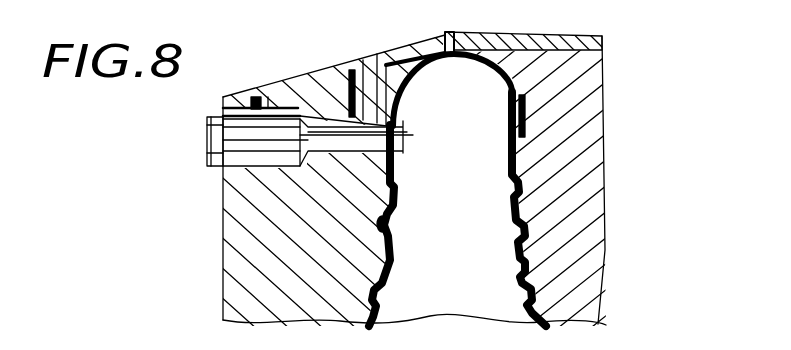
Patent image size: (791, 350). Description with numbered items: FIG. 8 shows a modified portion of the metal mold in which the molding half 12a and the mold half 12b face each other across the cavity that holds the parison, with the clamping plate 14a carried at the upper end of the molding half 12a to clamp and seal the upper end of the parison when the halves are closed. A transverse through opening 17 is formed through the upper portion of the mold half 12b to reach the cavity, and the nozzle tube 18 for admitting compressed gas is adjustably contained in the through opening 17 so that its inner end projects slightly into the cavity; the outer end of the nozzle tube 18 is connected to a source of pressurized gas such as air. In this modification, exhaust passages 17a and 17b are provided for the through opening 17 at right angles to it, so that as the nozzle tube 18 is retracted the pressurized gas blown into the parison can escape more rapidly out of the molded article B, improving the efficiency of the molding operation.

The molding half 12a is at (580, 235).
The mold half 12b is at (237, 267).
The clamping plate 14a is at (595, 44).
The through opening 17 is at (273, 158).
The exhaust passage 17a is at (258, 97).
The exhaust passage 17b is at (351, 75).
The nozzle tube 18 is at (214, 142).
The molded article B is at (390, 230).